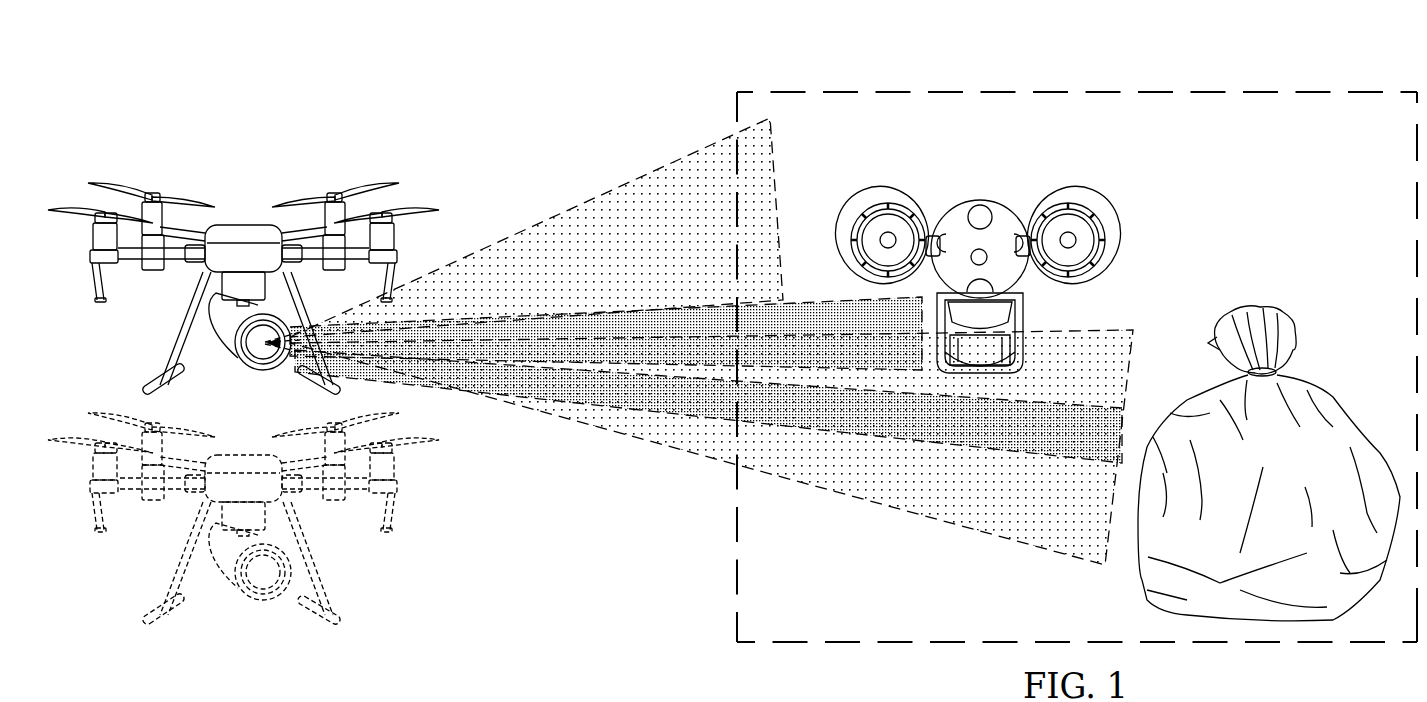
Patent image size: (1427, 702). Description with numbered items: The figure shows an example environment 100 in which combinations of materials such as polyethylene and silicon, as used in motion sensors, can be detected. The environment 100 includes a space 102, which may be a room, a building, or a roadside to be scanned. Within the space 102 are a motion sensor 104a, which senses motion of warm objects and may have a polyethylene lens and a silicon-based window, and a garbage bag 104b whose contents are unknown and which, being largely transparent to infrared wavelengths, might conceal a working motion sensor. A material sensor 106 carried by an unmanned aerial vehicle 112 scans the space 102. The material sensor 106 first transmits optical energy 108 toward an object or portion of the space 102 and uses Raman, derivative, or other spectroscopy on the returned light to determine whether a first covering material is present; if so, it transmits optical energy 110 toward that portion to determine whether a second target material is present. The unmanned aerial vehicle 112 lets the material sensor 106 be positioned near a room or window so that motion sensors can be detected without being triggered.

The environment 100 is at (414, 87).
The space 102 is at (1161, 84).
The motion sensor 104a is at (983, 200).
The garbage bag 104b is at (1268, 305).
The material sensor 106 is at (264, 352).
The optical energy 108 is at (620, 178).
The optical energy 110 is at (535, 314).
The unmanned aerial vehicle 112 is at (168, 325).